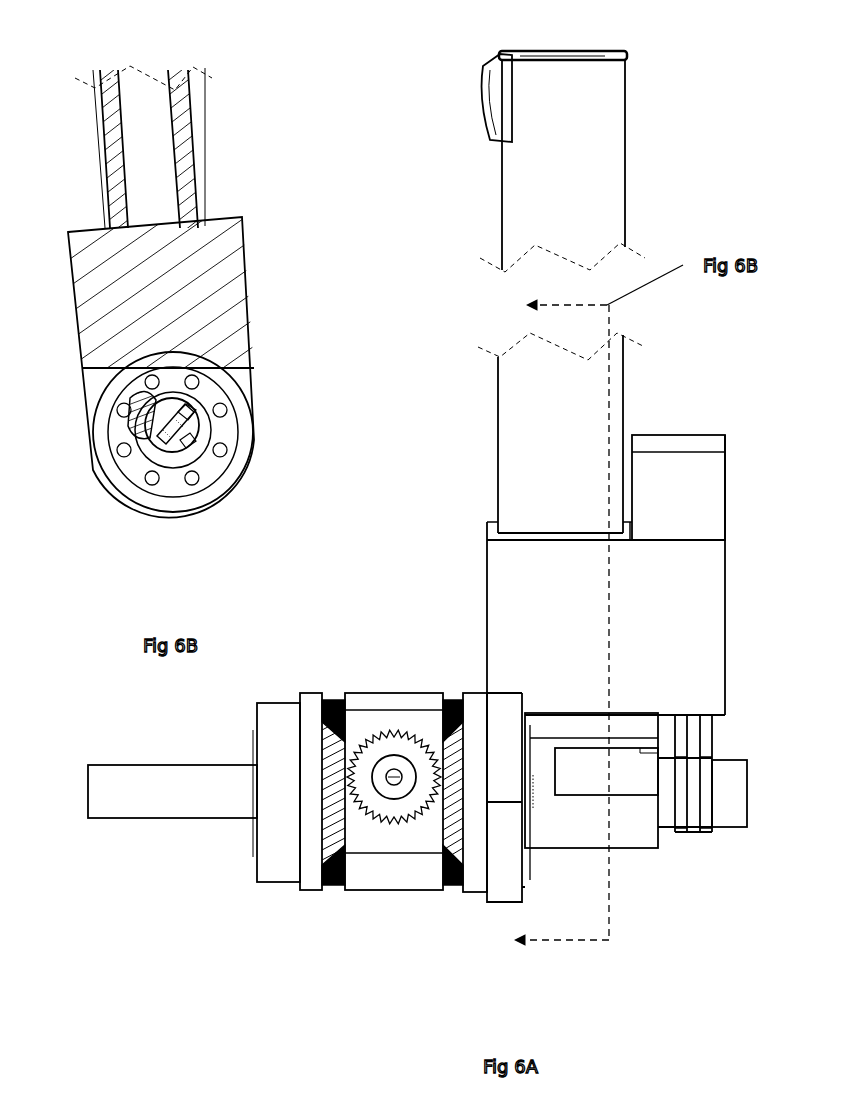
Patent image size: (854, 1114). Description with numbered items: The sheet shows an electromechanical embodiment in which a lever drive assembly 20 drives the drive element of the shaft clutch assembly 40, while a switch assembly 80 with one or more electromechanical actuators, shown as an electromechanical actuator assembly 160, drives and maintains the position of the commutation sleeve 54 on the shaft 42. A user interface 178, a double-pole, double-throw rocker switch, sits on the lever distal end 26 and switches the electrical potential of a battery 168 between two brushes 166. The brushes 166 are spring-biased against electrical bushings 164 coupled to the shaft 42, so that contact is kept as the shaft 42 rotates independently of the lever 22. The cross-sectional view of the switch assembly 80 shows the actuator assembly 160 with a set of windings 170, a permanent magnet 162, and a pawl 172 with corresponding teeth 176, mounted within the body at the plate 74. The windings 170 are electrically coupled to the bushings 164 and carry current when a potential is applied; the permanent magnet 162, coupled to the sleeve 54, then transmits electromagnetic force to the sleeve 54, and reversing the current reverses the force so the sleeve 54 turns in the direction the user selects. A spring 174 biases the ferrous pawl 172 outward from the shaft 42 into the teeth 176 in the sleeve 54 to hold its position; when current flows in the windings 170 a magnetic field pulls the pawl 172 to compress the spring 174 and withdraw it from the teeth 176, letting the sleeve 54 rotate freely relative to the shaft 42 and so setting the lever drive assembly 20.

In FIG. 6A, the lever drive assembly 20 is at (668, 216).
In FIG. 6B, the lever 22 is at (221, 158).
In FIG. 6A, the lever 22 is at (662, 384).
In FIG. 6A, the lever distal end 26 is at (642, 60).
In FIG. 6A, the shaft clutch assembly 40 is at (374, 919).
In FIG. 6B, the shaft 42 is at (170, 448).
In FIG. 6A, the shaft 42 is at (138, 836).
In FIG. 6B, the commutation sleeve 54 is at (150, 455).
In FIG. 6A, the commutation sleeve 54 is at (620, 863).
In FIG. 6B, the mounting plate 74 is at (223, 357).
In FIG. 6A, the switch assembly 80 is at (696, 942).
In FIG. 6B, the electromechanical actuator assembly 160 is at (244, 522).
In FIG. 6A, the electromechanical actuator assembly 160 is at (621, 910).
In FIG. 6B, the permanent magnet 162 is at (140, 462).
In FIG. 6A, the permanent magnet 162 is at (590, 772).
In FIG. 6A, the electrical bushings 164 is at (710, 833).
In FIG. 6A, the brushes 166 is at (685, 737).
In FIG. 6A, the battery 168 is at (692, 493).
In FIG. 6B, the windings 170 is at (162, 403).
In FIG. 6B, the pawl 172 is at (192, 406).
In FIG. 6B, the spring 174 is at (196, 426).
In FIG. 6B, the teeth 176 is at (186, 405).
In FIG. 6A, the user interface 178 is at (481, 96).